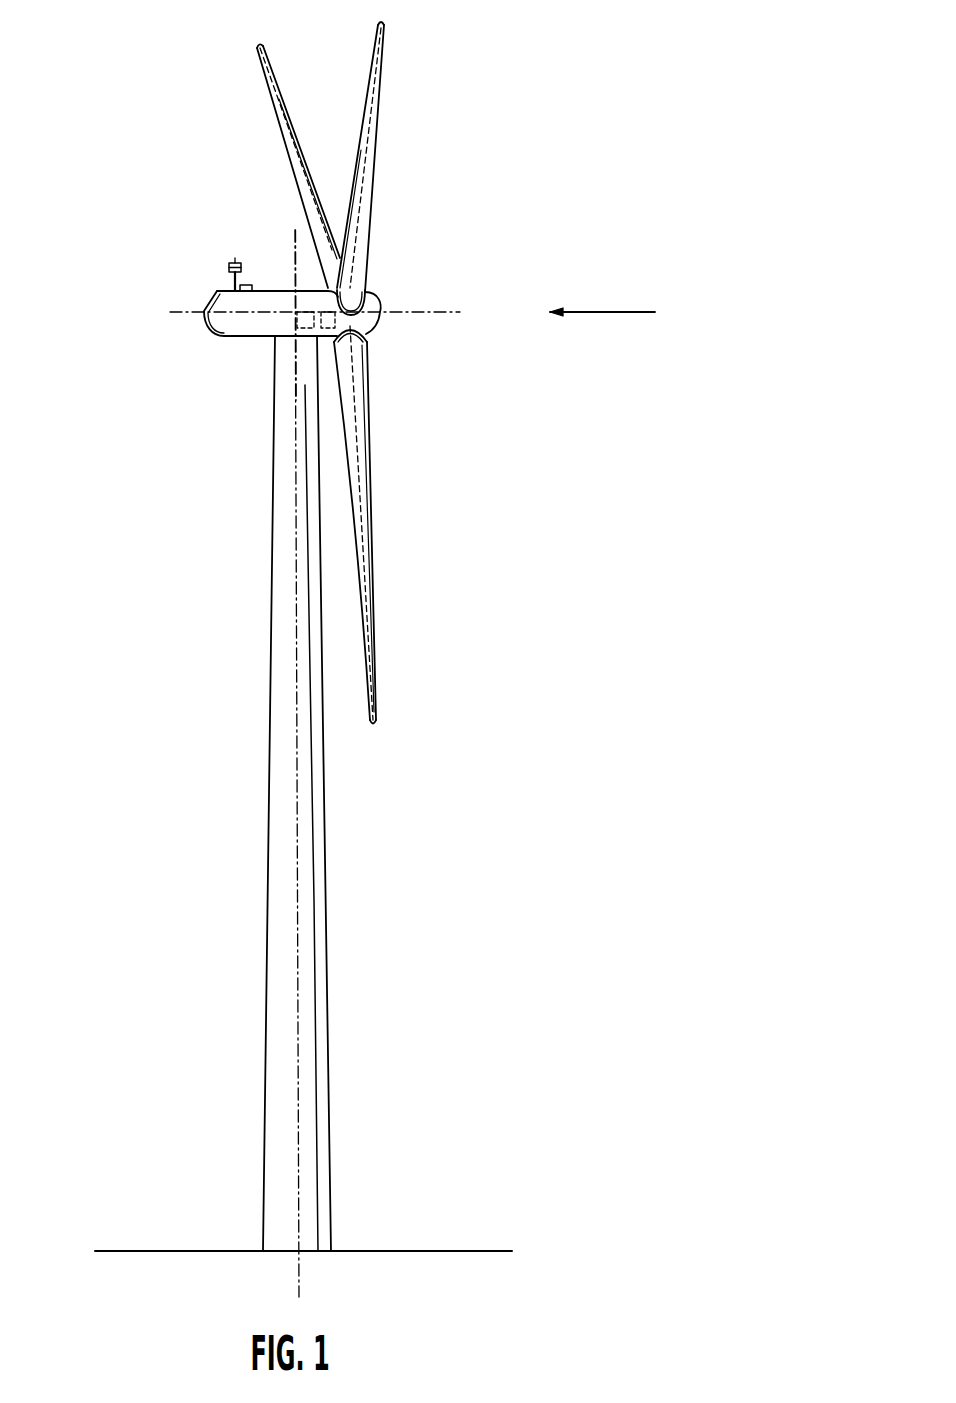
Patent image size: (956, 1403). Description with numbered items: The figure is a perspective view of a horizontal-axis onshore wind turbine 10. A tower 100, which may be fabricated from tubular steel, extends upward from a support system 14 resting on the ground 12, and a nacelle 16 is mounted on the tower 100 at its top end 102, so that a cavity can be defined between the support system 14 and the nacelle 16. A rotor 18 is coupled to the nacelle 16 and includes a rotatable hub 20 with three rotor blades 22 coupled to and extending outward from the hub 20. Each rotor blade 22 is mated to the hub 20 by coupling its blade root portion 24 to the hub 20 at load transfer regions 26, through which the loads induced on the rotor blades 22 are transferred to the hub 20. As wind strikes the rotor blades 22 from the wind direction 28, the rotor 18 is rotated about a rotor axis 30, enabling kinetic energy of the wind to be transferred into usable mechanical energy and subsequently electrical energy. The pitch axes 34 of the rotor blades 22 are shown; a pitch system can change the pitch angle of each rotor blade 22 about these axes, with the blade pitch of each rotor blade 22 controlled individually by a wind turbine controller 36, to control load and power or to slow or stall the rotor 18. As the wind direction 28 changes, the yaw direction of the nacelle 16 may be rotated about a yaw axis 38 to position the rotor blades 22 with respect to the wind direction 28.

The wind turbine 10 is at (482, 113).
The ground 12 is at (150, 1251).
The support system 14 is at (257, 1251).
The nacelle 16 is at (248, 337).
The rotor 18 is at (383, 233).
The rotatable hub 20 is at (379, 296).
The rotor blade 22 is at (363, 150).
The blade root portion 24 is at (356, 448).
The load transfer regions 26 is at (370, 327).
The wind direction 28 is at (593, 312).
The rotor axis 30 is at (430, 315).
The pitch axes 34 is at (253, 48).
The wind turbine controller 36 is at (279, 372).
The yaw axis 38 is at (300, 935).
The tower 100 is at (267, 933).
The top end 102 is at (275, 340).